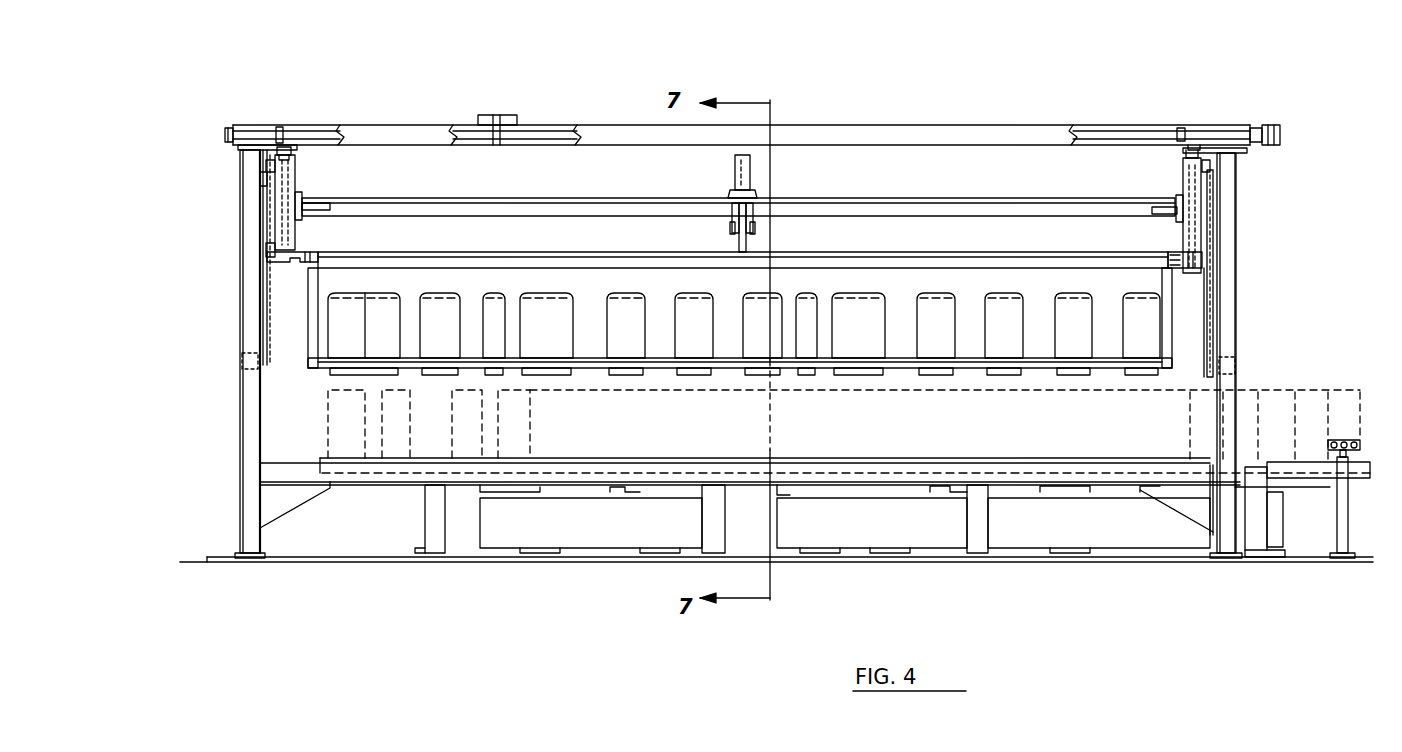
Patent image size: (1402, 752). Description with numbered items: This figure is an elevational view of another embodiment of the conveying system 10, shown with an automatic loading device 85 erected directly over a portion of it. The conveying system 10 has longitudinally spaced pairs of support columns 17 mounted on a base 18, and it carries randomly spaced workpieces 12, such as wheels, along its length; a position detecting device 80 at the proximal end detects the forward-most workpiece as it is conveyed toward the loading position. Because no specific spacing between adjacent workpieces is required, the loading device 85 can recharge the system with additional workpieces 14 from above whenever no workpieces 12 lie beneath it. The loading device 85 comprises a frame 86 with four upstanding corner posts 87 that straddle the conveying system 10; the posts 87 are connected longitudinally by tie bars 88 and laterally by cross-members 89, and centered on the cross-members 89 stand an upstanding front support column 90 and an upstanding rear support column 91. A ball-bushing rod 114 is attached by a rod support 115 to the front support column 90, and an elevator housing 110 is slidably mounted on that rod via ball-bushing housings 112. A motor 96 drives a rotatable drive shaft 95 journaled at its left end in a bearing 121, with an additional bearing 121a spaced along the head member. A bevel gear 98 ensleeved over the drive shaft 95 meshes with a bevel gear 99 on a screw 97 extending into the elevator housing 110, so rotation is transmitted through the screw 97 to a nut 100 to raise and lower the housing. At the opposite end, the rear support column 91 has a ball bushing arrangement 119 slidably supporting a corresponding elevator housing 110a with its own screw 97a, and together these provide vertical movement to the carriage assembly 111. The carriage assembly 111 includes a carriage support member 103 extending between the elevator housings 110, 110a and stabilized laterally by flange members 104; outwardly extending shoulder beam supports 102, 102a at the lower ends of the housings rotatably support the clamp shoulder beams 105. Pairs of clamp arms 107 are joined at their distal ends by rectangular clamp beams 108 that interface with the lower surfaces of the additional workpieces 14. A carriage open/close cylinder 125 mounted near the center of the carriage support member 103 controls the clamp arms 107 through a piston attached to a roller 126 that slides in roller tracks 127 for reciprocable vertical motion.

The conveying system 10 is at (1270, 392).
The workpieces 12 is at (340, 412).
The additional workpieces 14 is at (1000, 306).
The support columns 17 is at (425, 517).
The base 18 is at (480, 562).
The position detecting device 80 is at (1348, 438).
The automatic loading device 85 is at (283, 120).
The frame 86 is at (248, 466).
The corner posts 87 is at (248, 413).
The tie bars 88 is at (530, 486).
The cross-members 89 is at (242, 361).
The front support column 90 is at (1227, 272).
The rear support column 91 is at (250, 248).
The drive shaft 95 is at (330, 130).
The motor 96 is at (1262, 127).
The screw 97 is at (1226, 222).
The screw 97a is at (290, 152).
The bevel gear 98 is at (1181, 128).
The bevel gear 99 is at (1198, 140).
The nut 100 is at (1186, 163).
The shoulder beam support 102 is at (1215, 290).
The shoulder beam support 102a is at (287, 264).
The carriage support member 103 is at (1072, 208).
The flange members 104 is at (1160, 212).
The clamp shoulder beams 105 is at (1022, 262).
The clamp arms 107 is at (1170, 306).
The clamp beams 108 is at (1098, 365).
The elevator housing 110 is at (1184, 176).
The elevator housing 110a is at (296, 180).
The carriage assembly 111 is at (405, 196).
The ball-bushing housings 112 is at (1212, 166).
The ball-bushing rod 114 is at (1208, 343).
The rod support 115 is at (1213, 325).
The ball bushing arrangement 119 is at (258, 182).
The bearing 121 is at (232, 128).
The bearing 121a is at (497, 122).
The carriage open/close cylinder 125 is at (735, 175).
The roller 126 is at (730, 229).
The roller tracks 127 is at (748, 241).